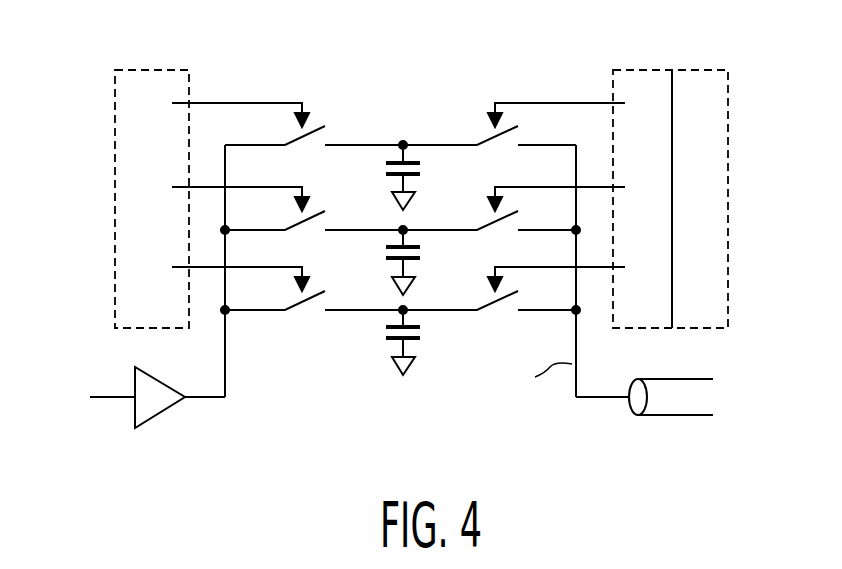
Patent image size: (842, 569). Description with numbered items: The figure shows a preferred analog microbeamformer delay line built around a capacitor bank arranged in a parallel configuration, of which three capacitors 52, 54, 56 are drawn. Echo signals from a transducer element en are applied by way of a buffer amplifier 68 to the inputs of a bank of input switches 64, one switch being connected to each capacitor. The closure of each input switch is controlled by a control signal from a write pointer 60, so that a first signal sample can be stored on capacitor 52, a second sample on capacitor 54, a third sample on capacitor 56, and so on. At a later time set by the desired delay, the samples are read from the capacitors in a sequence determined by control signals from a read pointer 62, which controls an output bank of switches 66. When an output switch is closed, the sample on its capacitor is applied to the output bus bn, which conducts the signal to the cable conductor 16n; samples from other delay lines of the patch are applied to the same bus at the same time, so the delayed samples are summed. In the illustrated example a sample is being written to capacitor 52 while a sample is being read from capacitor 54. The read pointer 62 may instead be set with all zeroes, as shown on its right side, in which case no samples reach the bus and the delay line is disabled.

The write pointer 60 is at (114, 182).
The read pointer 62 is at (617, 90).
The bank of input switches 64 is at (310, 63).
The output bank of switches 66 is at (473, 63).
The capacitor 52 is at (418, 178).
The capacitor 54 is at (418, 268).
The capacitor 56 is at (418, 340).
The buffer amplifier 68 is at (158, 418).
The cable conductor 16n is at (678, 405).